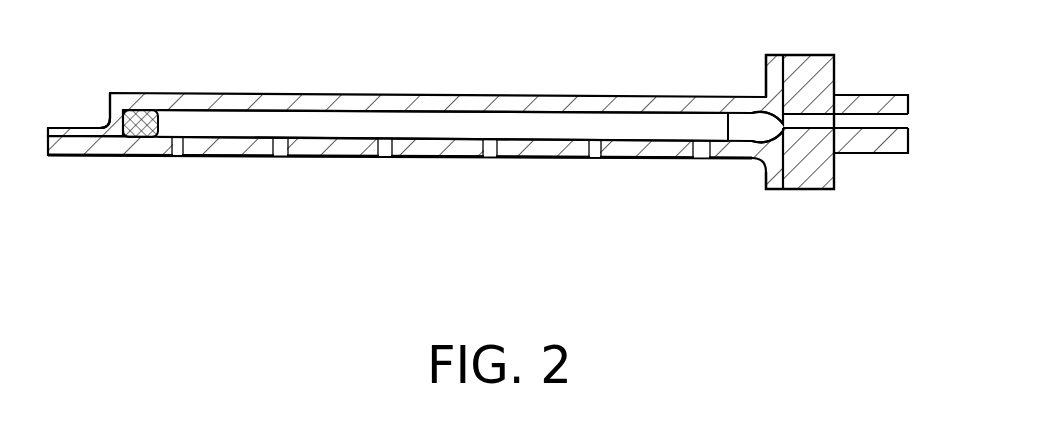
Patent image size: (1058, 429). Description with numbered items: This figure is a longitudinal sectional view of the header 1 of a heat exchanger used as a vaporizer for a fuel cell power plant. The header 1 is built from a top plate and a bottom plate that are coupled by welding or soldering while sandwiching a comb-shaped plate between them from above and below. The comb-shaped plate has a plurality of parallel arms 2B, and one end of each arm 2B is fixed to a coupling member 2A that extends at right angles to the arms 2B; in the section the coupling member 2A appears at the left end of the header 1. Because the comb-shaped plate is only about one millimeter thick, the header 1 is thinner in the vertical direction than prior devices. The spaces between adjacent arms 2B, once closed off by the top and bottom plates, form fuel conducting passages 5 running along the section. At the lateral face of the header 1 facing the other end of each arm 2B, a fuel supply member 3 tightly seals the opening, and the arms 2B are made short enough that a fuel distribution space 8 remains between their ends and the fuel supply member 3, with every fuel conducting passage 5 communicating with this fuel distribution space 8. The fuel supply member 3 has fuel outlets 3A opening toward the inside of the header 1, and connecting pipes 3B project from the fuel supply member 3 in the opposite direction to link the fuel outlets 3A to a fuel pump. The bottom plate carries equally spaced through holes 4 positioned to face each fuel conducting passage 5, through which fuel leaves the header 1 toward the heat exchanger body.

The header 1 is at (119, 100).
The coupling member 2A is at (133, 138).
The arm 2B is at (340, 103).
The fuel supply member 3 is at (803, 189).
The fuel outlet 3A is at (781, 122).
The connecting pipe 3B is at (852, 96).
The through hole 4 is at (486, 160).
The fuel conducting passage 5 is at (561, 130).
The fuel distribution space 8 is at (753, 128).